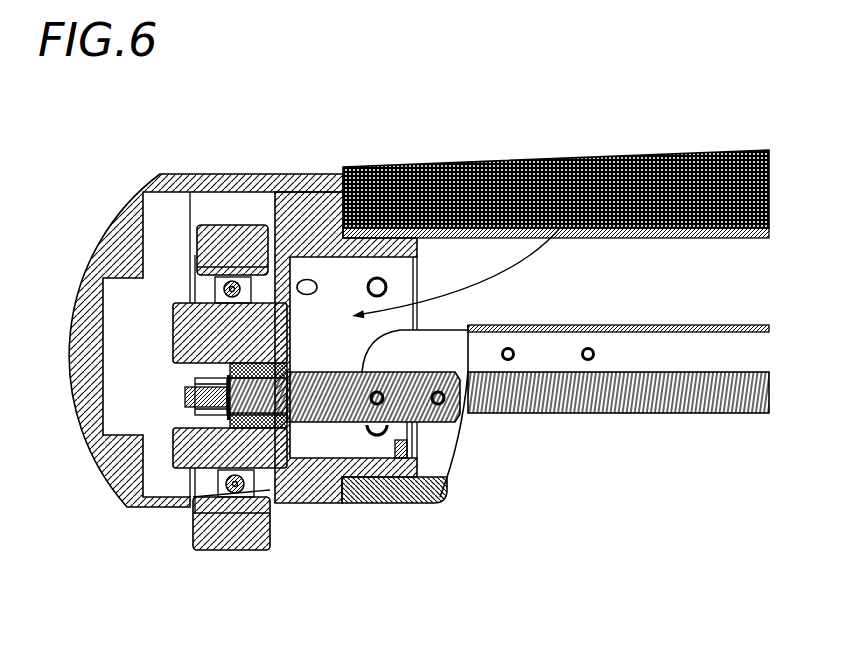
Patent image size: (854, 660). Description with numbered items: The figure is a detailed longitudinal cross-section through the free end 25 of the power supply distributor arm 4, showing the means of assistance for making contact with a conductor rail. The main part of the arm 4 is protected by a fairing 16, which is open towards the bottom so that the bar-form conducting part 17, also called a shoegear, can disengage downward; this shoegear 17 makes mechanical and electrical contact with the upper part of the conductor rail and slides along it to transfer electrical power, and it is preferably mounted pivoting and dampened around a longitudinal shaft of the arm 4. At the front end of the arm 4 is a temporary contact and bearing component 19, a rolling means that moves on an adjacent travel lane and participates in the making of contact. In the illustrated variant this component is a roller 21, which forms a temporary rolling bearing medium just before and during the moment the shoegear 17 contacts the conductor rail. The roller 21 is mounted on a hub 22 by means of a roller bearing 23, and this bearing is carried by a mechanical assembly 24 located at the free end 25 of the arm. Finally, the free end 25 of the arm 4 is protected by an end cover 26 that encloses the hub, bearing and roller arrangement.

The distributor arm 4 is at (725, 85).
The fairing 16 is at (409, 165).
The bar-form conducting part 17 is at (603, 412).
The temporary contact and bearing component 19 is at (241, 373).
The roller 21 is at (240, 227).
The hub 22 is at (210, 323).
The roller bearing 23 is at (252, 283).
The mechanical assembly 24 is at (600, 160).
The free end 25 is at (487, 130).
The end cover 26 is at (160, 186).